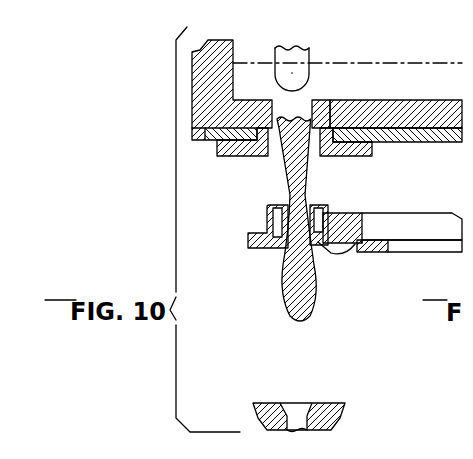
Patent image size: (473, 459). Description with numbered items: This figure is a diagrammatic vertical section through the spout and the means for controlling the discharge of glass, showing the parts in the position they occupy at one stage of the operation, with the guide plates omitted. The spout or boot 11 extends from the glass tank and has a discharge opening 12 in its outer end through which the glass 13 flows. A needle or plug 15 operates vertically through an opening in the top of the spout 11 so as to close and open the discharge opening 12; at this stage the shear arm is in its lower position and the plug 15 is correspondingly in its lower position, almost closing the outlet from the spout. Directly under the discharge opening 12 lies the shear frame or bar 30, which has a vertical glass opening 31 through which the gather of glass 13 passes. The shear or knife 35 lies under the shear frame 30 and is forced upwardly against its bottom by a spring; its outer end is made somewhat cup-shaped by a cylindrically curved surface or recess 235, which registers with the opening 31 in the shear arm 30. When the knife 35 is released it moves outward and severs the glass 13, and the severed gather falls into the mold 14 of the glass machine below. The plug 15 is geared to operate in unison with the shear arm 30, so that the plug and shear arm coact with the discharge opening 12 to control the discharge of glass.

The spout or boot 11 is at (425, 102).
The discharge opening 12 is at (322, 102).
The glass 13 is at (293, 176).
The mold 14 is at (340, 420).
The needle or plug 15 is at (307, 68).
The shear frame or bar 30 is at (383, 222).
The vertical glass opening 31 is at (283, 204).
The shear or knife 35 is at (415, 250).
The cylindrically curved surface or recess 235 is at (348, 249).